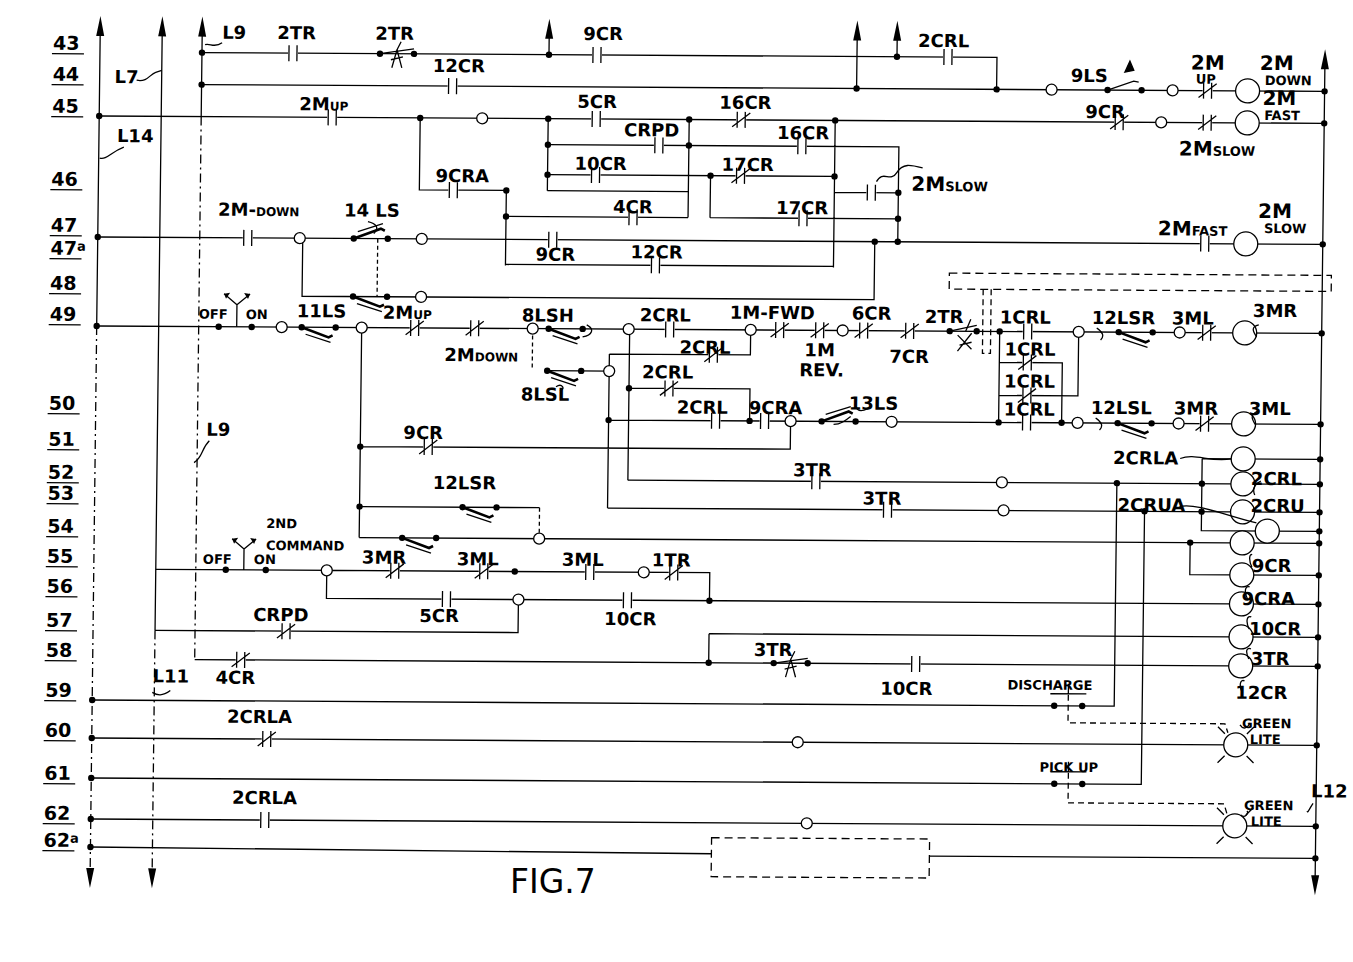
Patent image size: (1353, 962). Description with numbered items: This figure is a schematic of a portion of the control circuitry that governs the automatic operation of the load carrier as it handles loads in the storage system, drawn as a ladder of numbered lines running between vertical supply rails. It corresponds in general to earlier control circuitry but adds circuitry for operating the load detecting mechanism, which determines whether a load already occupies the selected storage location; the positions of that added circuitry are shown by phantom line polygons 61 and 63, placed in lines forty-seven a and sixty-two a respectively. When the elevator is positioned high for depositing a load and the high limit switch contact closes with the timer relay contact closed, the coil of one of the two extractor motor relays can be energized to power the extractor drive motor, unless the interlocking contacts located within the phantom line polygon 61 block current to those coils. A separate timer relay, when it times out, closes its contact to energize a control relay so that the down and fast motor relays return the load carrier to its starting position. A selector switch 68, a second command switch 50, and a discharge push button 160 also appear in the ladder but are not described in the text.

The second command selector switch 50 is at (249, 544).
The phantom line polygon 61 is at (1040, 268).
The phantom line polygon 63 is at (861, 832).
The off-on selector switch 68 is at (245, 274).
The discharge push button 160 is at (1058, 699).